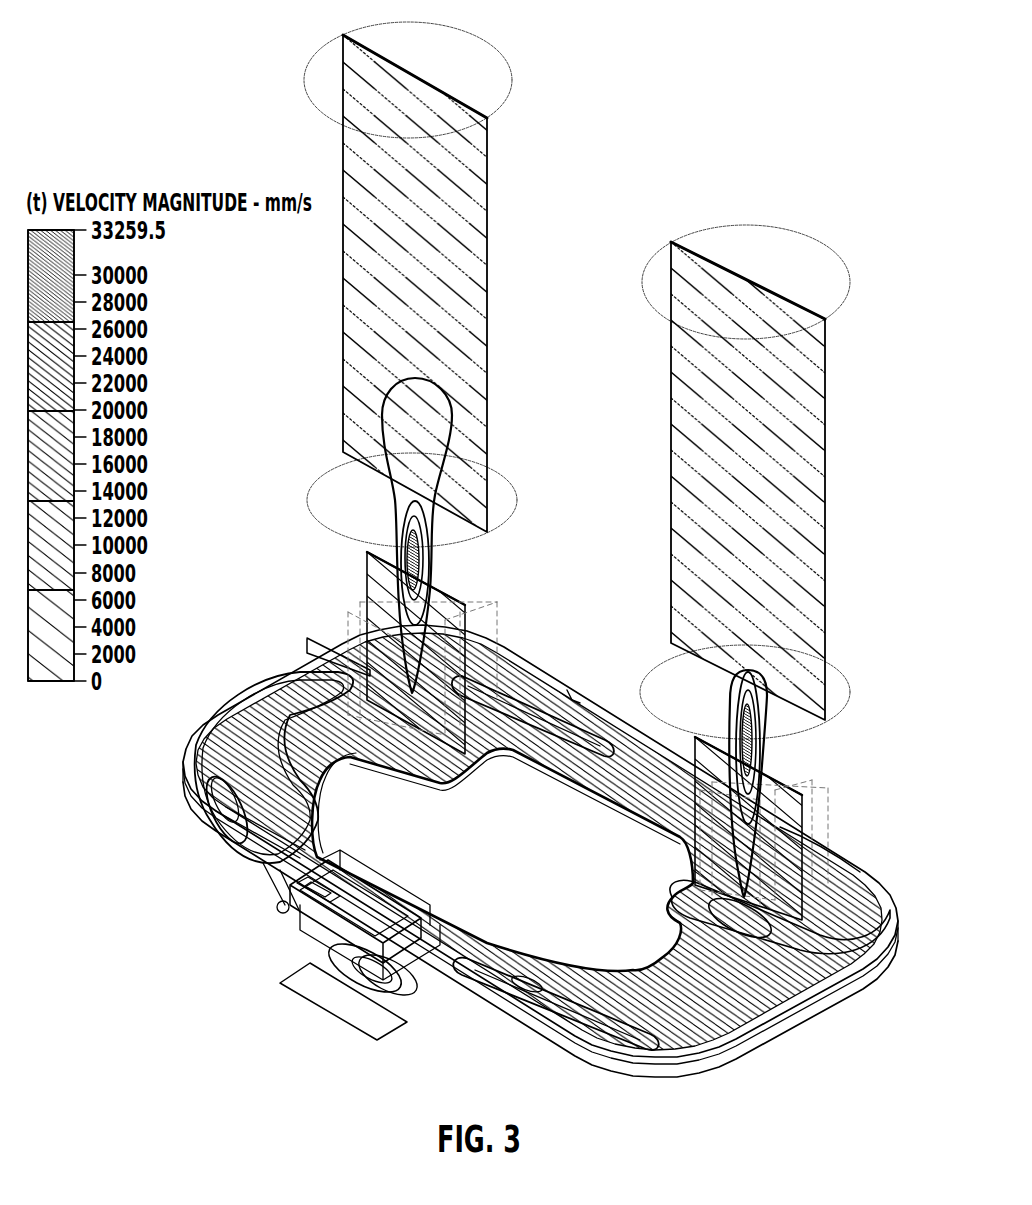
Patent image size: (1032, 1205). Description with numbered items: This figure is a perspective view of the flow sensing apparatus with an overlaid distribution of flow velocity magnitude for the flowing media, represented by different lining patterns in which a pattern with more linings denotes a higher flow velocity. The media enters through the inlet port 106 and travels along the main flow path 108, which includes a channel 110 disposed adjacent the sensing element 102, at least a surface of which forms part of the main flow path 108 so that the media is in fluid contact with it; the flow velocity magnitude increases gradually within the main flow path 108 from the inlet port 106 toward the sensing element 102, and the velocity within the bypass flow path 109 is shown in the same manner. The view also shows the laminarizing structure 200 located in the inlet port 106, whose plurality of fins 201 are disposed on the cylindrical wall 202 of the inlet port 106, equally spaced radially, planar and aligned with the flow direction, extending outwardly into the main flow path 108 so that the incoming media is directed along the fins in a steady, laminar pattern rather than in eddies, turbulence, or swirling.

The sensing element 102 is at (380, 985).
The inlet port 106 is at (540, 851).
The main flow path 108 is at (632, 1023).
The bypass flow path 109 is at (600, 750).
The channel 110 is at (330, 965).
The laminarizing structure 200 is at (850, 814).
The plurality of fins 201 is at (803, 850).
The cylindrical wall 202 is at (773, 777).